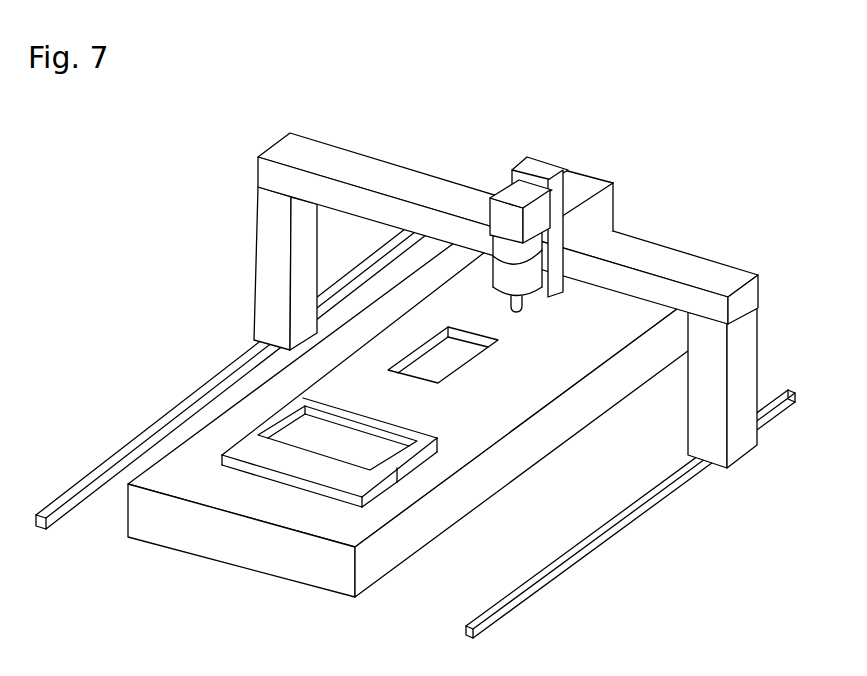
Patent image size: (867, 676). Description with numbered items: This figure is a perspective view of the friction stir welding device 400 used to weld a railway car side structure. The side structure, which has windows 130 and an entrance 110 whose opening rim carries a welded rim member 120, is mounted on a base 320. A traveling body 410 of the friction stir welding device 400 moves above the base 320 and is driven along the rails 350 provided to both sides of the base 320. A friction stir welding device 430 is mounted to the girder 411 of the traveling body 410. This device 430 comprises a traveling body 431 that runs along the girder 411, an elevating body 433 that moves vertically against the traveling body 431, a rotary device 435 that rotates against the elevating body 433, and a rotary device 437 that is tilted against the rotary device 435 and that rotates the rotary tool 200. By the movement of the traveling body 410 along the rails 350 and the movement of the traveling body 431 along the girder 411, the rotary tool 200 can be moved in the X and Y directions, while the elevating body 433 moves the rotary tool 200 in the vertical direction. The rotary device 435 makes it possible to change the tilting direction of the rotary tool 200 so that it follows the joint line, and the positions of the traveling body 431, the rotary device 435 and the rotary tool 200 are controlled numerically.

The entrance 110 is at (415, 448).
The rim member 120 is at (397, 457).
The window 130 is at (435, 366).
The rotary tool 200 is at (522, 306).
The base 320 is at (372, 562).
The rail 350 is at (570, 562).
The friction stir welding device 400 is at (234, 257).
The traveling body 410 is at (258, 172).
The girder 411 is at (385, 166).
The friction stir welding device 430 is at (558, 150).
The traveling body 431 is at (587, 187).
The elevating body 433 is at (507, 197).
The rotary device 435 is at (546, 240).
The rotary device 437 is at (500, 281).